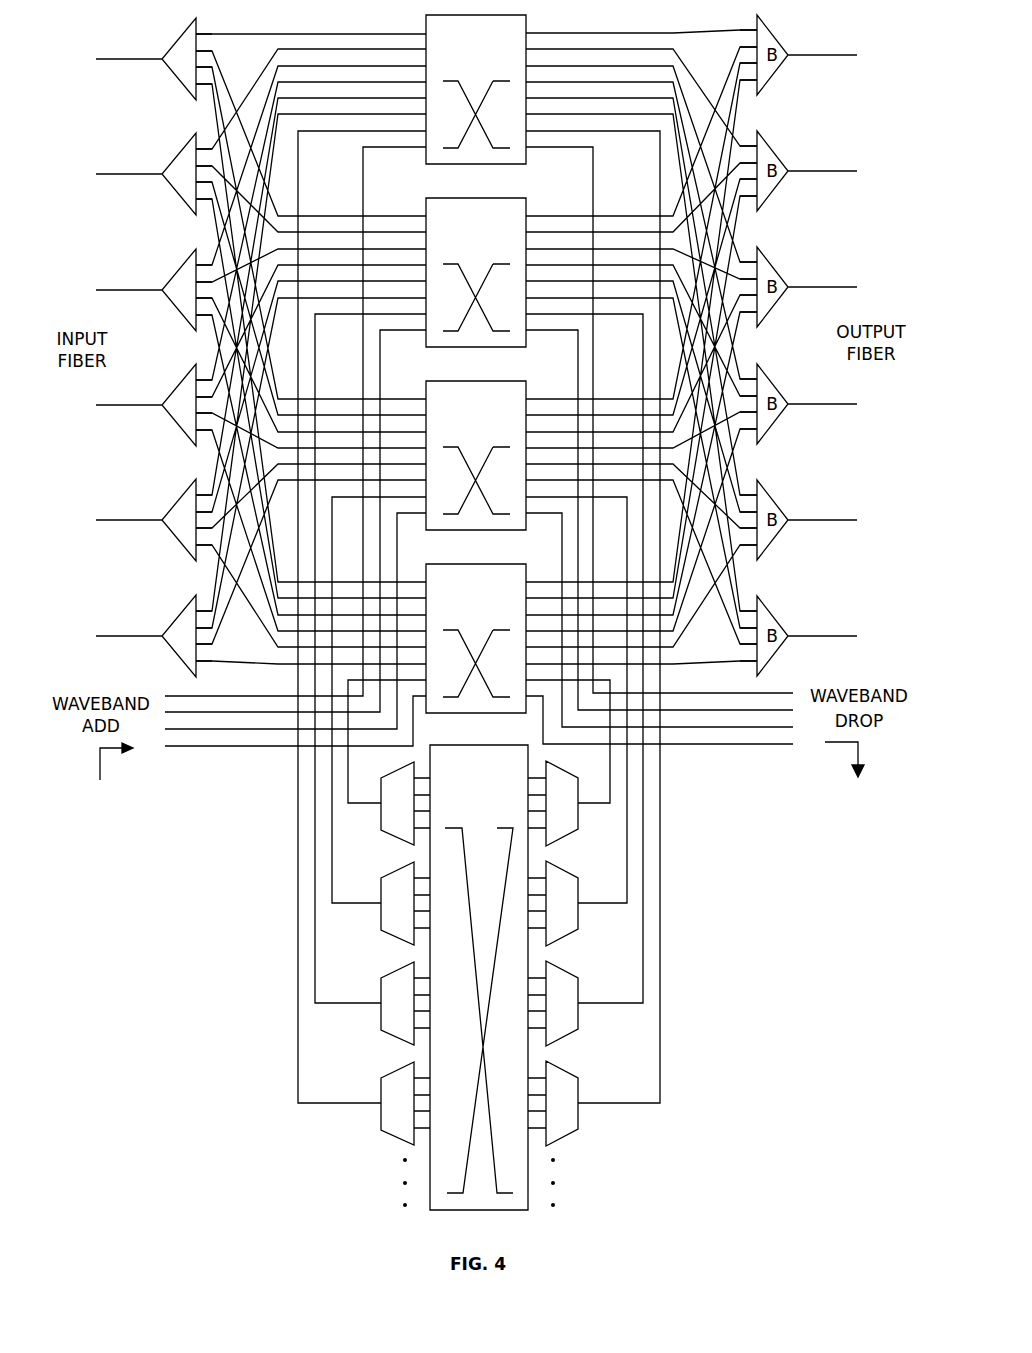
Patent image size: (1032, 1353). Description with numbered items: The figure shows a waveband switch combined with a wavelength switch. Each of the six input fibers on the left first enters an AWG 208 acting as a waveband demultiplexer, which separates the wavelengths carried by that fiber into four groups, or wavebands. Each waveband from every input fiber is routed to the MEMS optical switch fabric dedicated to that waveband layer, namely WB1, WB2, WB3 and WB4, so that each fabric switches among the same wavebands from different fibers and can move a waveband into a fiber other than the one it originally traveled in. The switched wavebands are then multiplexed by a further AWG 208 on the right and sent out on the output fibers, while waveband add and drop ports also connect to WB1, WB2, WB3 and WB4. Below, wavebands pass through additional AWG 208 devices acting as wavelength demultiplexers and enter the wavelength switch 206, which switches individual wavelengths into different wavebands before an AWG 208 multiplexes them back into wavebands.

The Arrayed Waveguide Grating (AWG) device 208 is at (172, 157).
The wavelength switch 206 is at (479, 977).
The waveband switch fabric WB1 is at (476, 89).
The waveband switch fabric WB2 is at (476, 272).
The waveband switch fabric WB3 is at (476, 455).
The waveband switch fabric WB4 is at (476, 638).